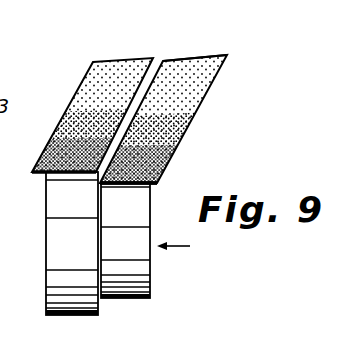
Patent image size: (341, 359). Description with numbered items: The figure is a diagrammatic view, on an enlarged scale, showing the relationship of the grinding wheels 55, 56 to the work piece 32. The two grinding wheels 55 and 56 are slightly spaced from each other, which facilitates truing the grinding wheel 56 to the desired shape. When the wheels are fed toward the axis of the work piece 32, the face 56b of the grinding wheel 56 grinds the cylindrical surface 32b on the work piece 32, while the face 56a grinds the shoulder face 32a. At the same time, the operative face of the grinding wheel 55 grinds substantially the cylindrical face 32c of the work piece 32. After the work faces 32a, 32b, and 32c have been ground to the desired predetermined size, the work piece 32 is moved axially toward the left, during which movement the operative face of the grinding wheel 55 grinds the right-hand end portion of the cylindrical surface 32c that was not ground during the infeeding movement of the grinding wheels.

The work piece 32 is at (43, 259).
The shoulder face 32a is at (101, 308).
The cylindrical surface 32b is at (135, 280).
The cylindrical face 32c is at (58, 204).
The grinding wheel 55 is at (62, 127).
The grinding wheel 56 is at (196, 110).
The face 56a is at (164, 61).
The face 56b is at (163, 171).